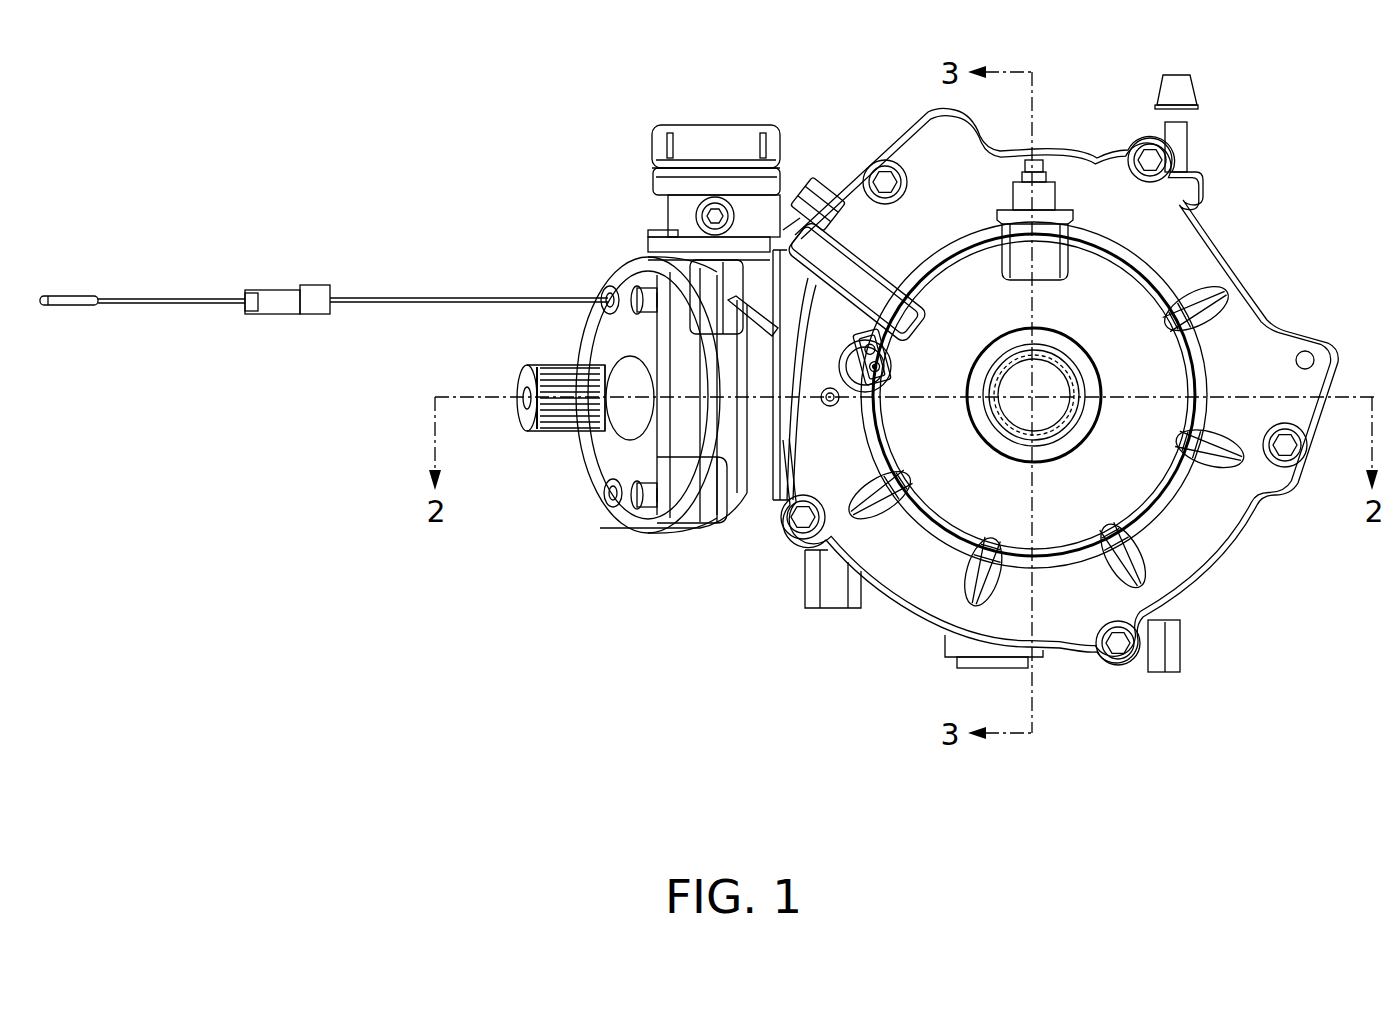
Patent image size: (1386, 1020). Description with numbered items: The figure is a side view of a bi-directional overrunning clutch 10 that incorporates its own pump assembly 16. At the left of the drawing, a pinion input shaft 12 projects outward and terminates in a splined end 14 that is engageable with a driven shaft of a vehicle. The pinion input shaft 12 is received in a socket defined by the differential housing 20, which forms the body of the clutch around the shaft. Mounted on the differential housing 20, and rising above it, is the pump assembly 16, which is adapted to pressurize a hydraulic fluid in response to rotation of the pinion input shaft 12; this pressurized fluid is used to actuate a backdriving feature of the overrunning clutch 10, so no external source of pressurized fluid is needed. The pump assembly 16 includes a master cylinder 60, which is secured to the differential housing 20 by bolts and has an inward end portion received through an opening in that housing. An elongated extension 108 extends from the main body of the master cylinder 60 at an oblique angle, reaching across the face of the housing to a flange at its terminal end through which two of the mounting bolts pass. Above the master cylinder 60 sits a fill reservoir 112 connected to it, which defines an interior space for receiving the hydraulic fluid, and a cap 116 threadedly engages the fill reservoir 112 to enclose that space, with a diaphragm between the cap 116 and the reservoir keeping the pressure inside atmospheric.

The bi-directional overrunning clutch 10 is at (1256, 238).
The pinion input shaft 12 is at (525, 386).
The splined end 14 is at (560, 432).
The pump assembly 16 is at (644, 116).
The differential housing 20 is at (700, 427).
The master cylinder 60 is at (668, 218).
The elongated extension 108 is at (793, 217).
The fill reservoir 112 is at (668, 180).
The cap 116 is at (713, 126).